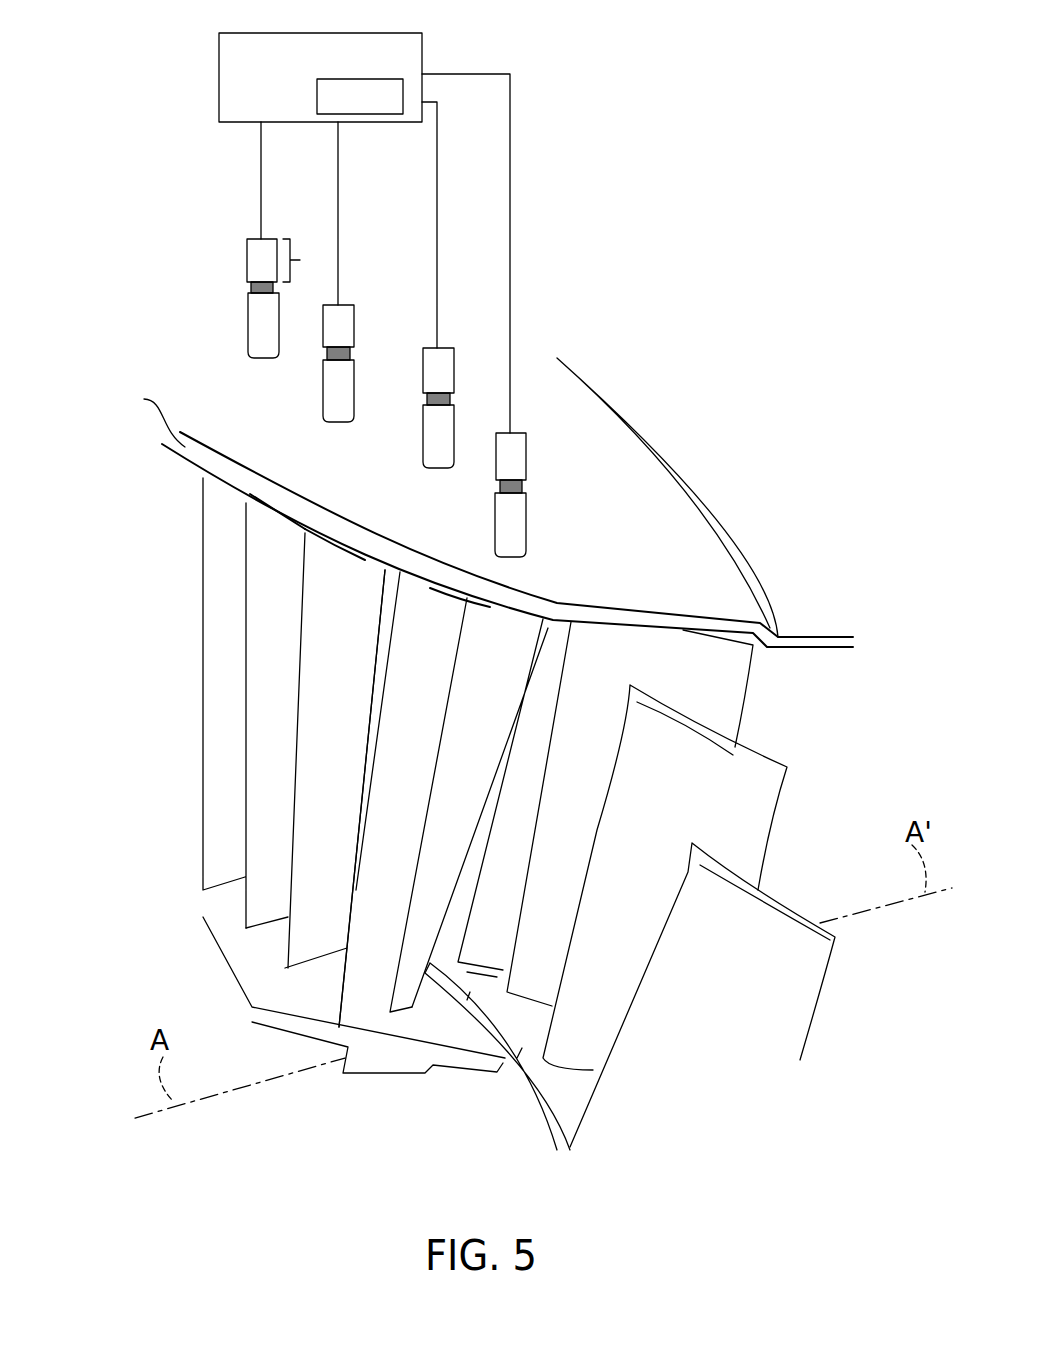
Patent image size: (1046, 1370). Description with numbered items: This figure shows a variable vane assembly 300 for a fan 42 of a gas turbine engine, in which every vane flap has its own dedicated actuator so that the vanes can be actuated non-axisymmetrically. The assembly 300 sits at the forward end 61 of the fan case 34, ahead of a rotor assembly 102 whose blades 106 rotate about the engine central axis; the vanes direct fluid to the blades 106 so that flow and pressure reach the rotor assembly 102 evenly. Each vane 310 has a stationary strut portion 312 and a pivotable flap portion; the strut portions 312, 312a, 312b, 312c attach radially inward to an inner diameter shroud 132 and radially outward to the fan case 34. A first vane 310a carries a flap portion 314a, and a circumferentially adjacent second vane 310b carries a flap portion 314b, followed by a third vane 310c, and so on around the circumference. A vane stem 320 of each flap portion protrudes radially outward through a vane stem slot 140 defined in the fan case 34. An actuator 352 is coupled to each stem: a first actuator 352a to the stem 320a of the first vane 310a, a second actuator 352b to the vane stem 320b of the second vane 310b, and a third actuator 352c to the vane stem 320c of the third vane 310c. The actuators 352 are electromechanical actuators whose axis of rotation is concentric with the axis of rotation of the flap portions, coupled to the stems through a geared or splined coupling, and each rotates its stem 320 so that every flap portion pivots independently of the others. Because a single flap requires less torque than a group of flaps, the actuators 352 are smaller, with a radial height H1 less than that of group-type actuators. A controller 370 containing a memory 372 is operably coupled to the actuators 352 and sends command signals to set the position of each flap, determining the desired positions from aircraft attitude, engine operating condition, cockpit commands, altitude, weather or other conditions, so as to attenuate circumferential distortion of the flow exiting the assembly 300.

The controller 370 is at (313, 74).
The memory 372 is at (376, 110).
The actuator 352 is at (255, 245).
The first actuator 352a is at (512, 458).
The second actuator 352b is at (447, 360).
The third actuator 352c is at (350, 318).
The vane stem 320 is at (250, 320).
The stem of first vane 320a is at (516, 512).
The vane stem of second vane 320b is at (430, 435).
The vane stem of third vane 320c is at (335, 400).
The radial height H1 is at (305, 260).
The vane stem slot 140 is at (547, 533).
The fan case 34 is at (665, 515).
The fan 42 is at (90, 272).
The variable vane assembly 300 is at (150, 605).
The vane 310 is at (219, 507).
The first vane 310a is at (460, 600).
The second vane 310b is at (333, 562).
The third vane 310c is at (278, 540).
The forward end of fan case 61 is at (150, 413).
The strut portion 312 is at (243, 556).
The strut portion of first vane 312a is at (445, 683).
The strut portion of second vane 312b is at (365, 648).
The strut portion of third vane 312c is at (297, 615).
The flap portion of first vane 314a is at (500, 733).
The flap portion of second vane 314b is at (395, 585).
The inner diameter shroud 132 is at (262, 975).
The blade 106 is at (725, 690).
The rotor assembly 102 is at (824, 722).